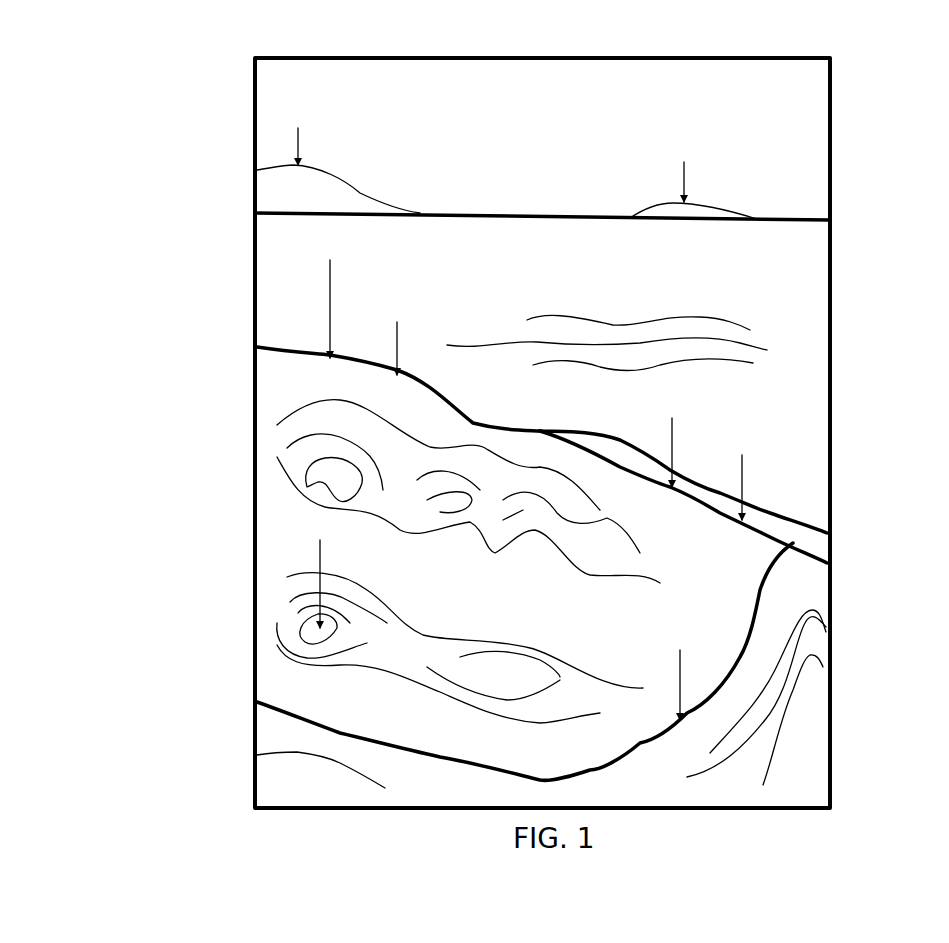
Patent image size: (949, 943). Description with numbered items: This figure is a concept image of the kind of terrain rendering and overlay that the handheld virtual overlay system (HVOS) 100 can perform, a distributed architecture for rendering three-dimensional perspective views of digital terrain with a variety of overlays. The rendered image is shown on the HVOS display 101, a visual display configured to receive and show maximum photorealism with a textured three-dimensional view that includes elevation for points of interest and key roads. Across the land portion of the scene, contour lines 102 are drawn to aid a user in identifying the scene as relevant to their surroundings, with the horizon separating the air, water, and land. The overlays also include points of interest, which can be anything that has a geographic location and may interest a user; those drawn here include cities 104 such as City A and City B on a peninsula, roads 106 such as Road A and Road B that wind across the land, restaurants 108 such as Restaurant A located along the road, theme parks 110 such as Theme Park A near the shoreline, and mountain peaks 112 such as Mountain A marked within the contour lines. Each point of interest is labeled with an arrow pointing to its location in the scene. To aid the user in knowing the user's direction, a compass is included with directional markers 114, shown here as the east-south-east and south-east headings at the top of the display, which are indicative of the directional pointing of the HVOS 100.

The handheld virtual overlay system 100 is at (127, 61).
The HVOS display 101 is at (255, 381).
The contour lines 102 is at (277, 475).
The cities 104 is at (273, 103).
The roads 106 is at (710, 403).
The restaurants 108 is at (788, 447).
The theme parks 110 is at (268, 246).
The mountain peaks 112 is at (268, 528).
The directional markers 114 is at (792, 97).